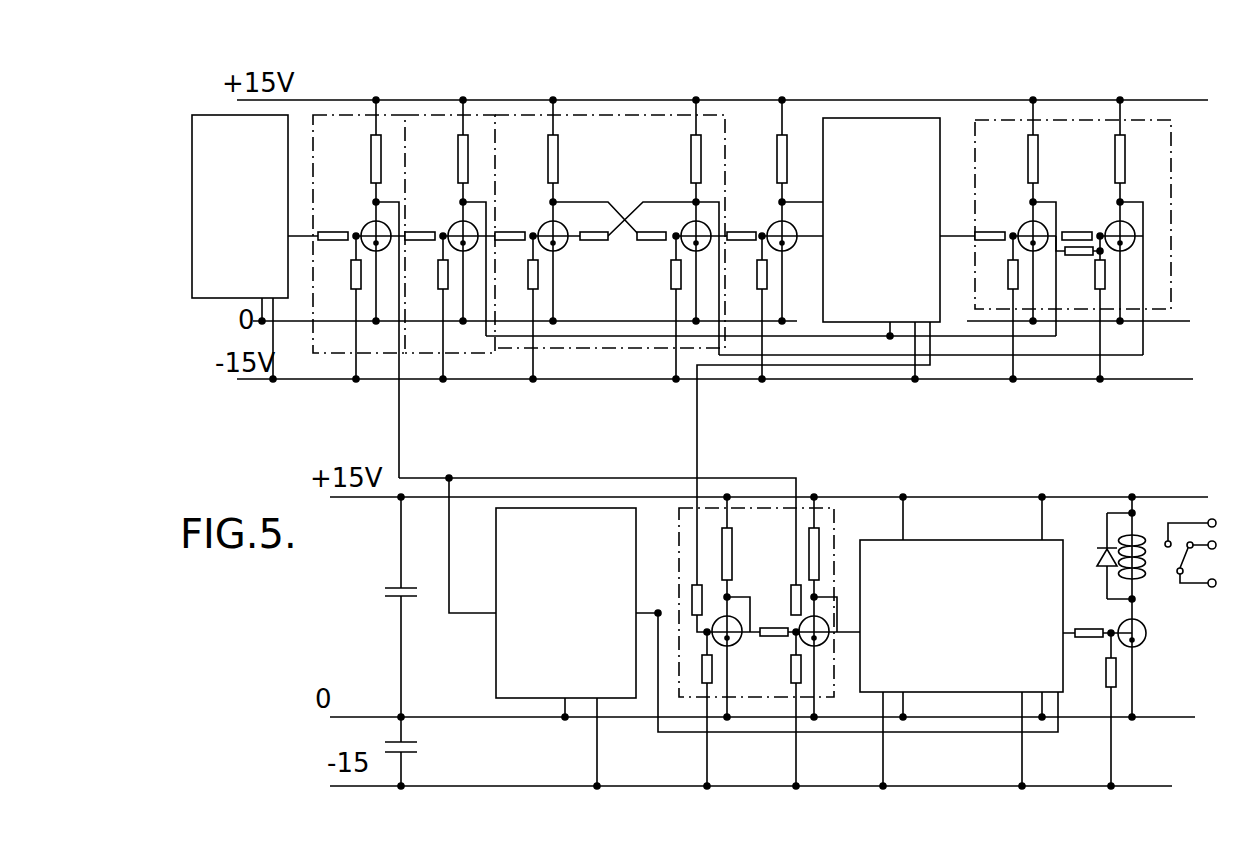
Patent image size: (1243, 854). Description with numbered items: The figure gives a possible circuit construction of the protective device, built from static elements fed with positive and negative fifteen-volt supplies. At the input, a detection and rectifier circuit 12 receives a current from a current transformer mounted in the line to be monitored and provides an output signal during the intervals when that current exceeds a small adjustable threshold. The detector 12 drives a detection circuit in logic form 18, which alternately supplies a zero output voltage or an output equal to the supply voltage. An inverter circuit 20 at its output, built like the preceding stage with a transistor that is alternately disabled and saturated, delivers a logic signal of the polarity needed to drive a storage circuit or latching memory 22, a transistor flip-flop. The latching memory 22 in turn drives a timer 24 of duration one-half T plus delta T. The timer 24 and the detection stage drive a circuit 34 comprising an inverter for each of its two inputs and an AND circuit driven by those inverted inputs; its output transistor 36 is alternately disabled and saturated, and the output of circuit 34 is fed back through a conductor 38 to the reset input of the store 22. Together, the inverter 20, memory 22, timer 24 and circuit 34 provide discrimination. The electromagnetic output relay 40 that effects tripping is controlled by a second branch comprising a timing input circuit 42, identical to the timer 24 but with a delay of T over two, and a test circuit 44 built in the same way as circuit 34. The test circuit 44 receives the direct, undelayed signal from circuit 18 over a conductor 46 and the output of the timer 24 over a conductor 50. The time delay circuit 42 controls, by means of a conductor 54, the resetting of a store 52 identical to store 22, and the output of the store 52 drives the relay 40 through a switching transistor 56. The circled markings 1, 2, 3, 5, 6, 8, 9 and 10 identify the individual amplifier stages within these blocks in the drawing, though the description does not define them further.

The detection and rectifier circuit 12 is at (192, 142).
The detection circuit in logic form 18 is at (343, 115).
The inverter circuit 20 is at (425, 115).
The latching memory 22 is at (612, 115).
The timer 24 is at (897, 118).
The circuit comprising inverters and an AND circuit 34 is at (1172, 167).
The output transistor 36 is at (1138, 239).
The conductor 38 is at (1143, 347).
The conductor 50 is at (827, 365).
The conductor 46 is at (556, 478).
The test circuit 44 is at (679, 520).
The timing input circuit 42 is at (496, 632).
The store 52 is at (983, 693).
The conductor 54 is at (822, 732).
The switching transistor 56 is at (1130, 641).
The electromagnetic output relay 40 is at (1141, 535).
The operational amplifier 1 is at (376, 202).
The operational amplifier 2 is at (463, 202).
The operational amplifier 3 is at (782, 202).
The operational amplifier 5 is at (1033, 202).
The operational amplifier 6 is at (1120, 202).
The operational amplifier 8 is at (658, 613).
The operational amplifier 9 is at (814, 597).
The operational amplifier 10 is at (1066, 633).